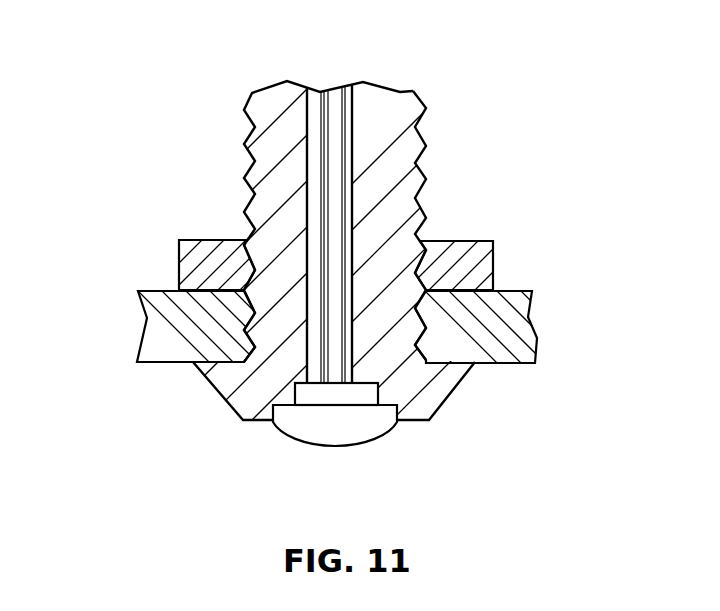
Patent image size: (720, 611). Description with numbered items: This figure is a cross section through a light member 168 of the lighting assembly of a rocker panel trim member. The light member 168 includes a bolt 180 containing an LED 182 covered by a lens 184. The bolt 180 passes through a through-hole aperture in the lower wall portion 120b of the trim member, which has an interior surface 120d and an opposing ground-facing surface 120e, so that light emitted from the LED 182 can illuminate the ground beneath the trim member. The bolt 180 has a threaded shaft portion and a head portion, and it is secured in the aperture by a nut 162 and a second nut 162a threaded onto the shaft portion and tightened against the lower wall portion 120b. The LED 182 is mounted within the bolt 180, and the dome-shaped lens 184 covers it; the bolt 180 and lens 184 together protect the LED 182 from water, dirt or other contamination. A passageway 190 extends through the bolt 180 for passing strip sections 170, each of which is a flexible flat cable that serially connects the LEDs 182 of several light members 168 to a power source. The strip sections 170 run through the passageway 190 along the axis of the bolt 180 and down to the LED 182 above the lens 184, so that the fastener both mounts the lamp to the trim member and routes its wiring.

The passageway 190 is at (358, 96).
The strip section 170 is at (310, 140).
The bolt 180 is at (428, 155).
The nut 162 is at (188, 240).
The second nut 162a is at (427, 263).
The interior surface 120d is at (155, 291).
The lower wall portion 120b is at (155, 328).
The ground-facing surface 120e is at (163, 362).
The LED 182 is at (308, 389).
The lens 184 is at (335, 447).
The light member 168 is at (478, 418).